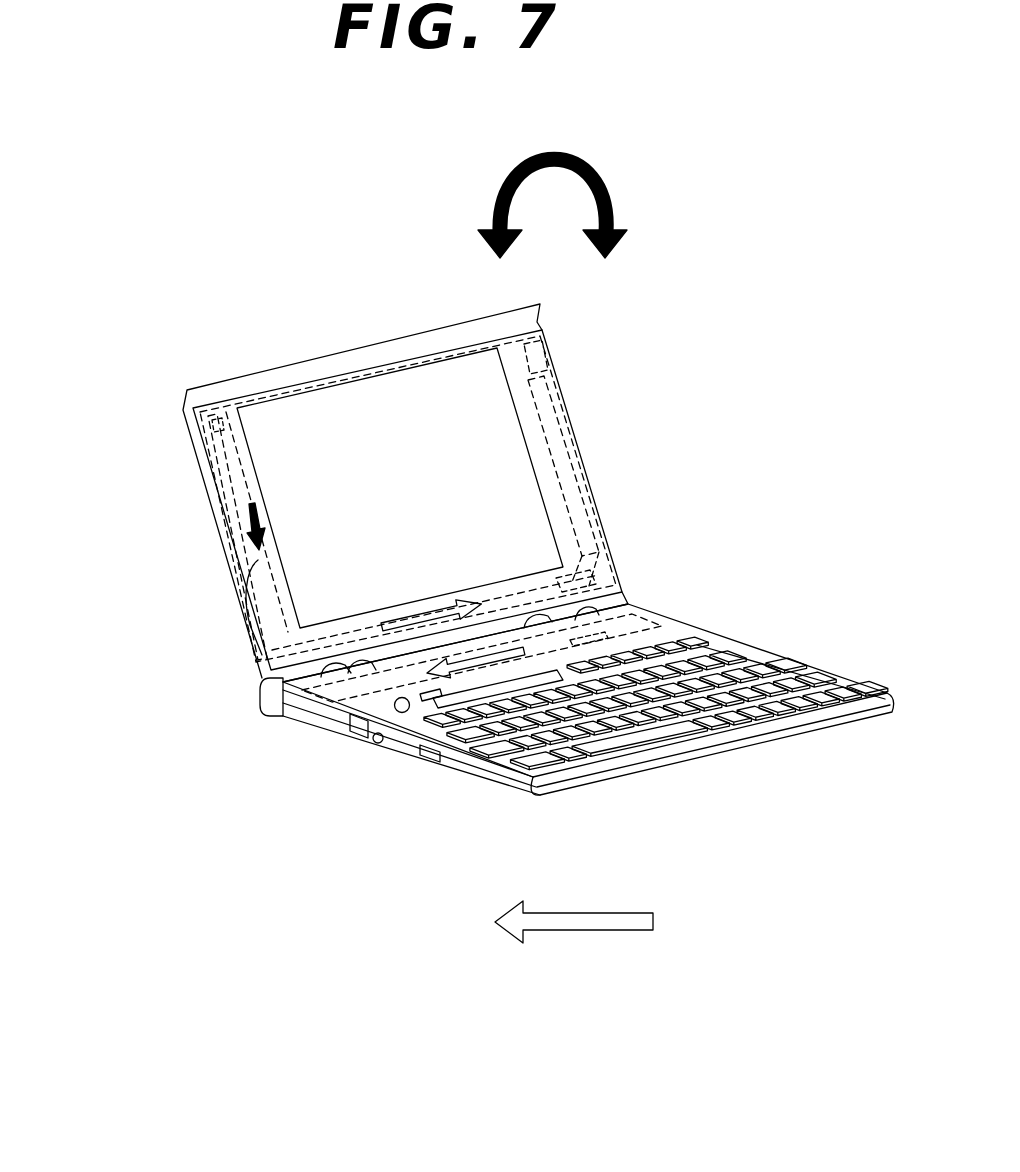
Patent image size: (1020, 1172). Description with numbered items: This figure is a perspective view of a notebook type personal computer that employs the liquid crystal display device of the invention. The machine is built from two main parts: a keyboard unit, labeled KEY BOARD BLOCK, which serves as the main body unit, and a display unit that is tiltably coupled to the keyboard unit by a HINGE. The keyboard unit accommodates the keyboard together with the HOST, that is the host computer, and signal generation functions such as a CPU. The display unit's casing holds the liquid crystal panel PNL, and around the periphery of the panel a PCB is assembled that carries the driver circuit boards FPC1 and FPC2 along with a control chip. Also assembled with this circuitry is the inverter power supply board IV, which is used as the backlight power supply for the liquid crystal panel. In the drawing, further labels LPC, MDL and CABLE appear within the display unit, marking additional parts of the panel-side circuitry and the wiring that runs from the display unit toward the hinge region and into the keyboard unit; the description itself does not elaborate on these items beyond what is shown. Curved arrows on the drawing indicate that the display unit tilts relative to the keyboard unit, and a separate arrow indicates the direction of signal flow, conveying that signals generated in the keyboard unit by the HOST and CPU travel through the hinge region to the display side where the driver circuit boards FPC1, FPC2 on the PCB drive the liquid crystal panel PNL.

The liquid crystal panel PNL is at (400, 488).
The element PCB is at (213, 447).
The driver circuit board FPC1 is at (222, 422).
The driver circuit board FPC2 is at (578, 558).
The LCD panel controller LPC is at (548, 372).
The inverter power supply board IV is at (550, 405).
The module MDL is at (568, 585).
The cable CABLE is at (246, 615).
The hinges HINGE is at (327, 665).
The host HOST is at (637, 621).
The element CPU is at (640, 626).
The keyboard unit KEY BOARD BLOCK is at (599, 723).